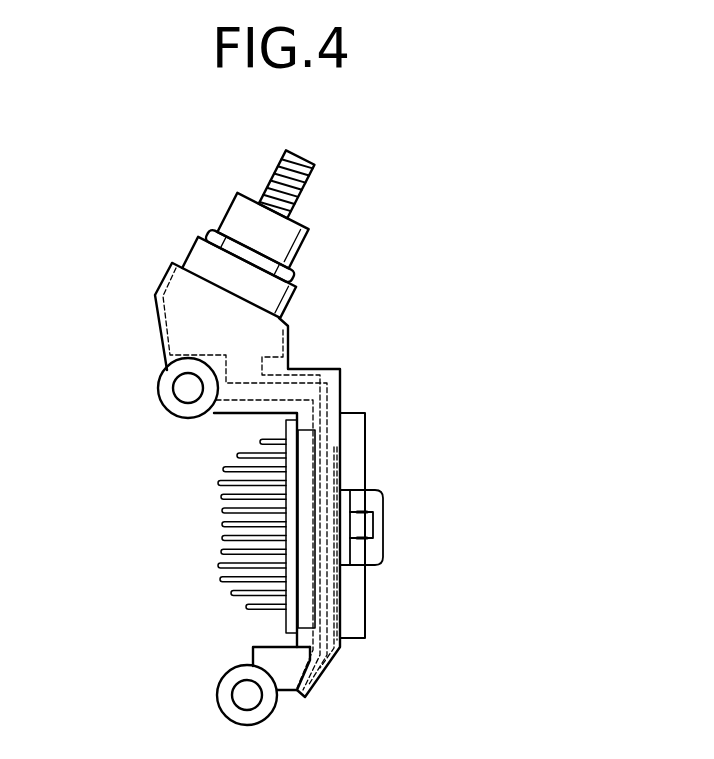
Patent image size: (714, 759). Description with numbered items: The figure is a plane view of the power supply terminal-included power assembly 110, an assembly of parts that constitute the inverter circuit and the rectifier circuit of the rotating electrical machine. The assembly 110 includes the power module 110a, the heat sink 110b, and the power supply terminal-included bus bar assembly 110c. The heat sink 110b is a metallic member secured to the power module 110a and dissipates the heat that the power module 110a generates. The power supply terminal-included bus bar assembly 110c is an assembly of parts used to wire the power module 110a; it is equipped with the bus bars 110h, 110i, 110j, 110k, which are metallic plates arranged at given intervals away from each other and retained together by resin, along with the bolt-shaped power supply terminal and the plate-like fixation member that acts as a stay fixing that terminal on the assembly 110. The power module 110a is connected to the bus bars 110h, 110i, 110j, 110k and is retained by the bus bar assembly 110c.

The power supply terminal-included power assembly 110 is at (412, 218).
The power module 110a is at (306, 607).
The heat sink 110b is at (289, 596).
The power supply terminal-included bus bar assembly 110c is at (333, 403).
The bus bar 110h is at (333, 385).
The bus bar 110i is at (235, 400).
The bus bar 110j is at (340, 468).
The bus bar 110k is at (333, 592).